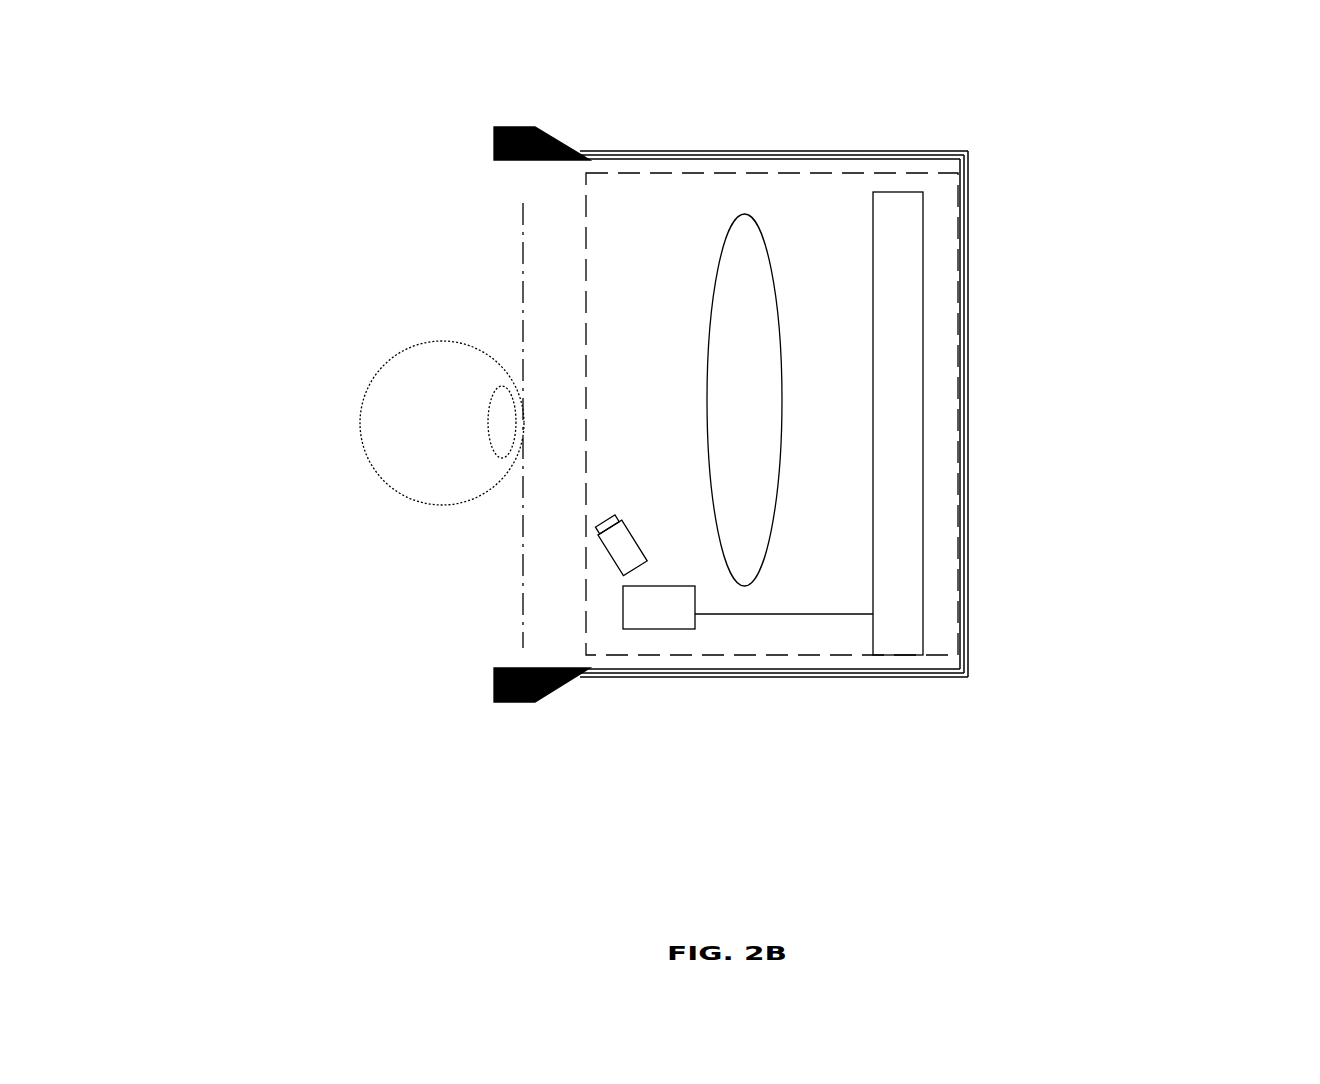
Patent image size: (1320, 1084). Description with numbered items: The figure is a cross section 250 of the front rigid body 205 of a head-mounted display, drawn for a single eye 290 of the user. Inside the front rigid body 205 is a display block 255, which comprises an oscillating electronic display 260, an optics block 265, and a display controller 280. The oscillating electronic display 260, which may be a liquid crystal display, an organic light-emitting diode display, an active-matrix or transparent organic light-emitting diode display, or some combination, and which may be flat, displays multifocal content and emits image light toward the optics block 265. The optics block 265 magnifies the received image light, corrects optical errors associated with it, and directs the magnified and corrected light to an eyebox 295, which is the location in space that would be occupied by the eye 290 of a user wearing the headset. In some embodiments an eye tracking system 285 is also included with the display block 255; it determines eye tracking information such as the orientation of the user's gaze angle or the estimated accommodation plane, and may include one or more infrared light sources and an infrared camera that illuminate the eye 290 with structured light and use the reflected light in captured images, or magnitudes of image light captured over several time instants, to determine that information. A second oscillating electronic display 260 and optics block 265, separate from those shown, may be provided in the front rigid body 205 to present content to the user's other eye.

The cross section 250 is at (168, 62).
The front rigid body 205 is at (968, 150).
The display block 255 is at (832, 655).
The oscillating electronic display 260 is at (922, 329).
The optics block 265 is at (775, 427).
The display controller 280 is at (650, 629).
The eye tracking system 285 is at (605, 570).
The eye 290 is at (403, 355).
The eyebox 295 is at (522, 333).